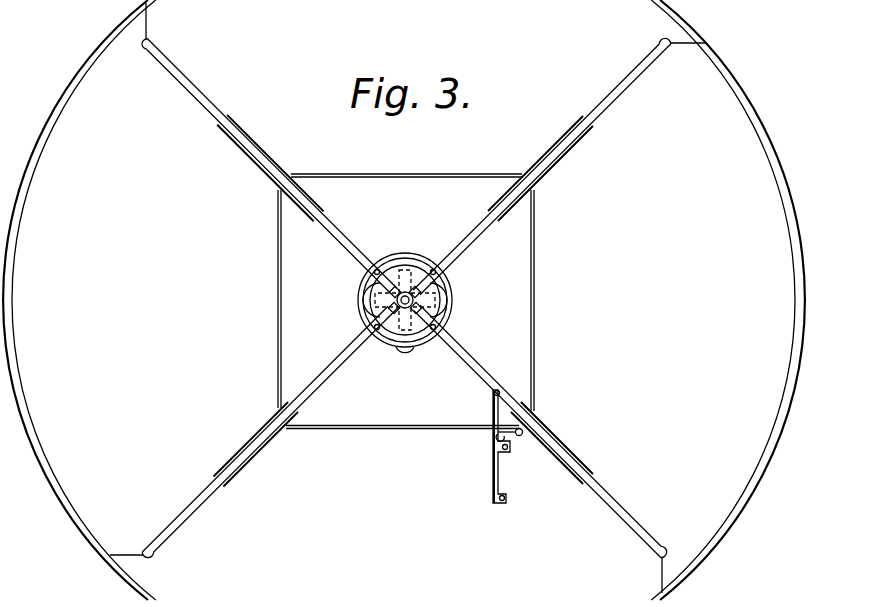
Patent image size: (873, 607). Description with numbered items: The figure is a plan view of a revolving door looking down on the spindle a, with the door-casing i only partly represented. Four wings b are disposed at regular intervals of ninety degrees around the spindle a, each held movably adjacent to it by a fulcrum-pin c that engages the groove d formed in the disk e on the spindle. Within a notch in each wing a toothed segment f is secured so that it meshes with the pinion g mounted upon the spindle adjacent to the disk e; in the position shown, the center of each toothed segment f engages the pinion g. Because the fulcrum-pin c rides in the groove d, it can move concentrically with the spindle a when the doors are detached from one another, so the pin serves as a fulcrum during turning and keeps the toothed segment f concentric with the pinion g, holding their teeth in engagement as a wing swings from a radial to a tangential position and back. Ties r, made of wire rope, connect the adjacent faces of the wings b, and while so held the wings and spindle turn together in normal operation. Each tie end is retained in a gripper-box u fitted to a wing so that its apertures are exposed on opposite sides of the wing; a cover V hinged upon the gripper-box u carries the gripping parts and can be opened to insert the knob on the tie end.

The wings b is at (210, 84).
The gripper-box u is at (280, 152).
The ties r is at (448, 175).
The spindle a is at (420, 276).
The disk e is at (405, 265).
The fulcrum-pin c is at (436, 273).
The pinion g is at (440, 301).
The toothed segment f is at (372, 305).
The groove d is at (402, 348).
The cover V is at (492, 473).